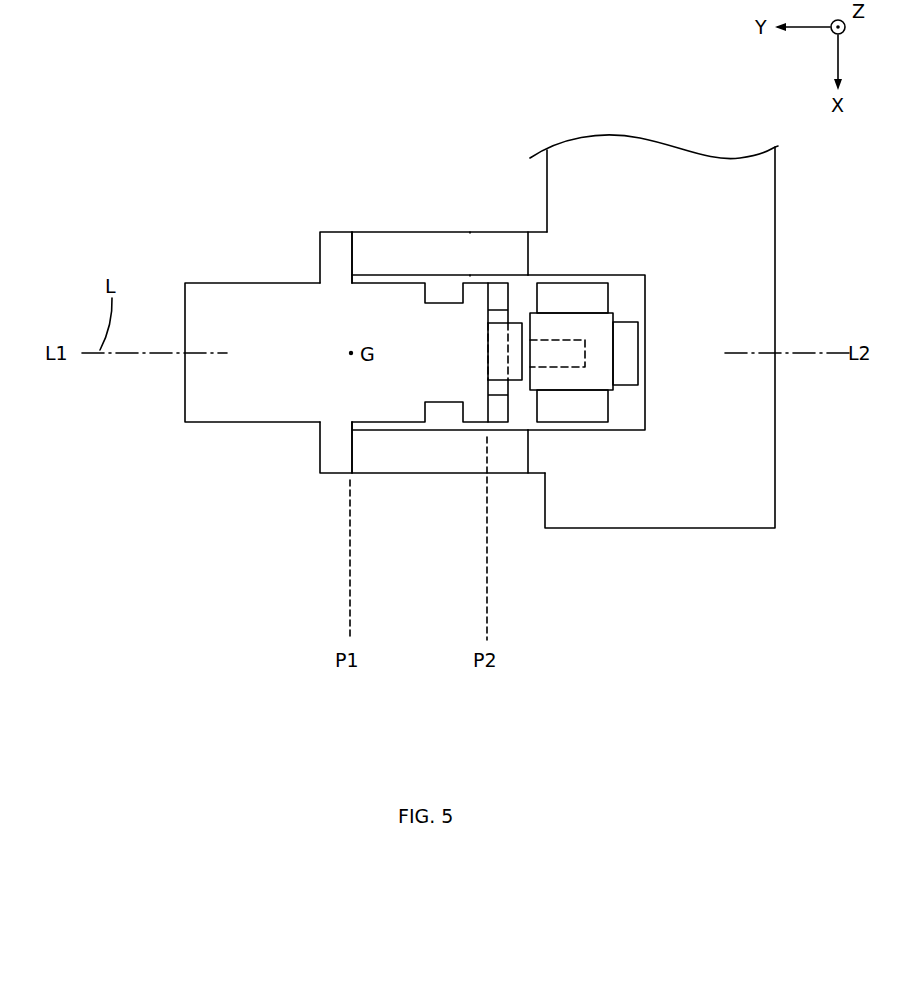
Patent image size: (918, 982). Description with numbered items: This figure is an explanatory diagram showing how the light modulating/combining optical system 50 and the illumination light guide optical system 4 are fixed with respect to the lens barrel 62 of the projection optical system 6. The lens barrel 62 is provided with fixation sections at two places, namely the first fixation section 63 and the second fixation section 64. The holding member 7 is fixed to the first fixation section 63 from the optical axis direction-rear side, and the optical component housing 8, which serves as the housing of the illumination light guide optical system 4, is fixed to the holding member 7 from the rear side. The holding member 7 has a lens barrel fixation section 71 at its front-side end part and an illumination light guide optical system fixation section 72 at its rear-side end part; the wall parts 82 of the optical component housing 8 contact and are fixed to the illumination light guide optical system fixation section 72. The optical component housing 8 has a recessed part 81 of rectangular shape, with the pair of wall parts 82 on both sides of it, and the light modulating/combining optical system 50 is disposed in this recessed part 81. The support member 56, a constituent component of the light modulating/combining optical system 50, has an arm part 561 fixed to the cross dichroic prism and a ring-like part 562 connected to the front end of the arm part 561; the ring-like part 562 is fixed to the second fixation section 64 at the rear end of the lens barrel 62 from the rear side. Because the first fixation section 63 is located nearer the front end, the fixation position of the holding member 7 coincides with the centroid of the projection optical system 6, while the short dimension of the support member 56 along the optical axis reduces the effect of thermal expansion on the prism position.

The illumination light guide optical system 4 is at (779, 184).
The projection optical system 6 is at (258, 335).
The holding member 7 is at (417, 231).
The optical component housing 8 is at (669, 383).
The light modulating/combining optical system 50 is at (597, 411).
The support member 56 is at (597, 411).
The lens barrel 62 is at (214, 273).
The first fixation section 63 is at (322, 250).
The second fixation section 64 is at (476, 292).
The lens barrel fixation section 71 is at (366, 240).
The illumination light guide optical system fixation section 72 is at (500, 239).
The recessed part 81 is at (637, 293).
The wall parts 82 is at (537, 231).
The arm part 561 is at (594, 309).
The ring-like part 562 is at (510, 295).